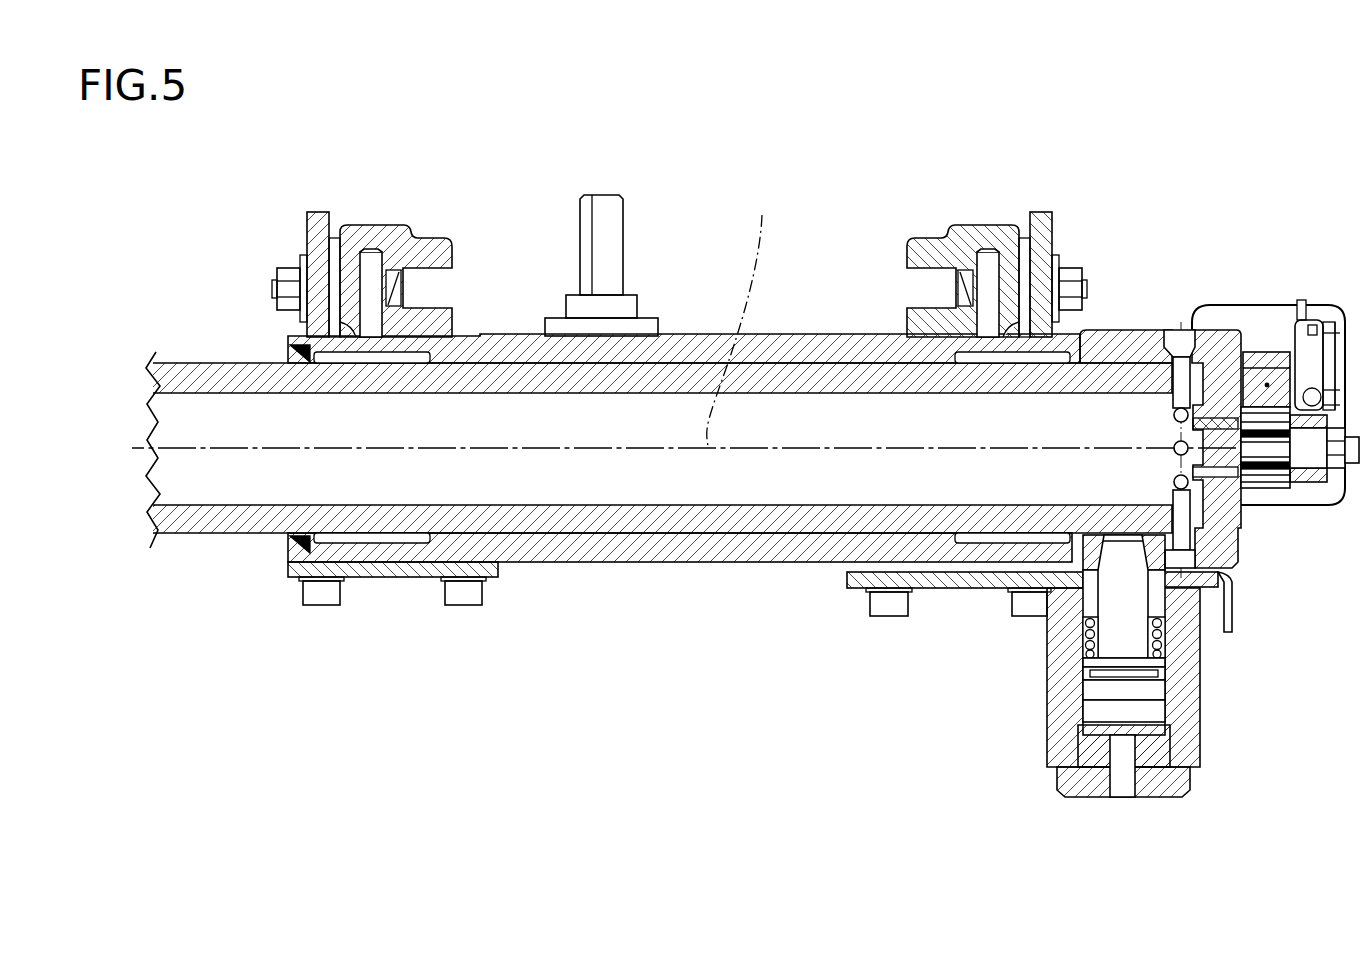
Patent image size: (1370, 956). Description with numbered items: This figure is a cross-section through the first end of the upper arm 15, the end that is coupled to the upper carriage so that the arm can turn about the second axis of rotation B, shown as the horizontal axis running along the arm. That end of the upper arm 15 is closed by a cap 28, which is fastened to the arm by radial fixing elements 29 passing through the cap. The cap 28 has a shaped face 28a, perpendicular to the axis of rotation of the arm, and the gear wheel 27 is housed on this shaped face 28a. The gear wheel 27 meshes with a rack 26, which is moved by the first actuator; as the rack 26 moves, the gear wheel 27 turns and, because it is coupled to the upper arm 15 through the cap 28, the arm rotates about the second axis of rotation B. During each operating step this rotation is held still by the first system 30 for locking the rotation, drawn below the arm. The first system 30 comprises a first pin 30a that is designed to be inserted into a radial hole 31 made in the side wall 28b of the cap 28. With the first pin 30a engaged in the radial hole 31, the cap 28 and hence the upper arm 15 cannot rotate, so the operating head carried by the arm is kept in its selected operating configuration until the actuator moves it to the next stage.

The upper arm 15 is at (195, 378).
The second axis of rotation B is at (740, 317).
The rack 26 is at (1273, 380).
The gear wheel 27 is at (1270, 463).
The cap 28 is at (1212, 330).
The shaped face 28a is at (1240, 530).
The side wall 28b is at (1108, 330).
The radial fixing elements 29 is at (1174, 446).
The first system for locking the rotation 30 is at (1052, 629).
The first pin 30a is at (1110, 590).
The radial hole 31 is at (1120, 545).